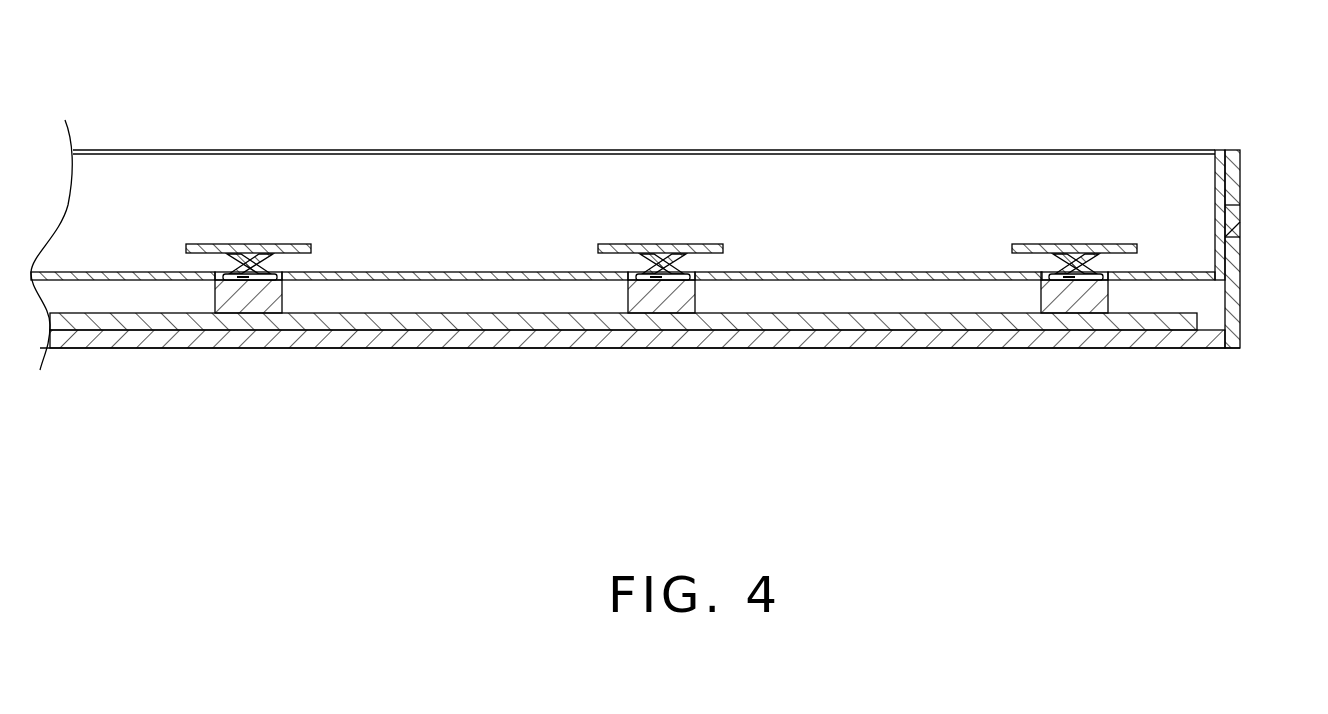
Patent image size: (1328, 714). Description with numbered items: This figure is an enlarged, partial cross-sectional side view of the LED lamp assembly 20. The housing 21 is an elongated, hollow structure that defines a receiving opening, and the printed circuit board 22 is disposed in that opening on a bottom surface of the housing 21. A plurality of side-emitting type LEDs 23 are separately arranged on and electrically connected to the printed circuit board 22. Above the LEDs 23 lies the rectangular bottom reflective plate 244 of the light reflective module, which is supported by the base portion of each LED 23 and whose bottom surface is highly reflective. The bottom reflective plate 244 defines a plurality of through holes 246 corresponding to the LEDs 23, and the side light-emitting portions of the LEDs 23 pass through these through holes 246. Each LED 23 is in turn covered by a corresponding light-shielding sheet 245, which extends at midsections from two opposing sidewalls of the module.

The LED lamp assembly 20 is at (722, 56).
The housing 21 is at (1233, 265).
The printed circuit board 22 is at (1190, 323).
The side-emitting type LED 23 is at (1053, 305).
The bottom reflective plate 244 is at (866, 277).
The light-shielding sheet 245 is at (708, 252).
The through hole 246 is at (634, 277).